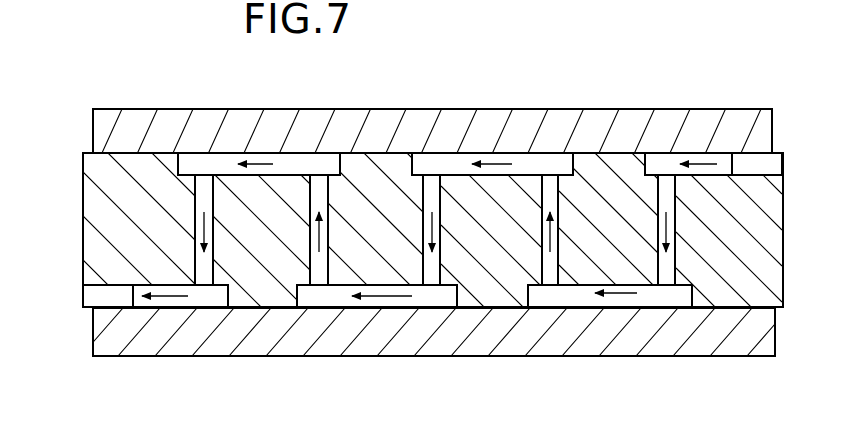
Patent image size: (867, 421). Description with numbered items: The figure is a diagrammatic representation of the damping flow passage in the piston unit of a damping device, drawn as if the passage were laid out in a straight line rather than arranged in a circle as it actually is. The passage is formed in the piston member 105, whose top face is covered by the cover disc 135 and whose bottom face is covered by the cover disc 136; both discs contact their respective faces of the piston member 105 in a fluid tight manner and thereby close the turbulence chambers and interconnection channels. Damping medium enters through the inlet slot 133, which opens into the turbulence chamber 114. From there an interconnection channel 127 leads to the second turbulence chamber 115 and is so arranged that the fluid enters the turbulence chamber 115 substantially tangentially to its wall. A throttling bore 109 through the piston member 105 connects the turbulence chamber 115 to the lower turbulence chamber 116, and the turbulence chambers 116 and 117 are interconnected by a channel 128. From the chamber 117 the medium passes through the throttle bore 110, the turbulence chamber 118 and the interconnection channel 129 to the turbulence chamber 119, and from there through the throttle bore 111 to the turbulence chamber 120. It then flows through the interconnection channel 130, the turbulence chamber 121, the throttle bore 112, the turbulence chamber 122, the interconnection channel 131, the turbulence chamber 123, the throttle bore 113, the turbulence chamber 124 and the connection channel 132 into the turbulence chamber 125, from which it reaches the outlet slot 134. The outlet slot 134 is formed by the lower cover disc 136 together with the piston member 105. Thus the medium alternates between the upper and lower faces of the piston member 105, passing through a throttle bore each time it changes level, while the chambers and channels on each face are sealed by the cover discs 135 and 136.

The piston member 105 is at (752, 288).
The throttling bore 109 is at (659, 230).
The throttle bore 110 is at (543, 230).
The throttle bore 111 is at (424, 230).
The throttle bore 112 is at (311, 231).
The throttle bore 113 is at (196, 210).
The turbulence chamber 114 is at (743, 160).
The turbulence chamber 115 is at (648, 158).
The turbulence chamber 116 is at (685, 292).
The turbulence chamber 117 is at (530, 298).
The turbulence chamber 118 is at (560, 160).
The turbulence chamber 119 is at (417, 160).
The turbulence chamber 120 is at (448, 298).
The turbulence chamber 121 is at (297, 298).
The turbulence chamber 122 is at (327, 165).
The turbulence chamber 123 is at (187, 160).
The turbulence chamber 124 is at (228, 298).
The turbulence chamber 125 is at (117, 298).
The interconnection channel 127 is at (703, 158).
The channel 128 is at (610, 298).
The interconnection channel 129 is at (492, 155).
The interconnection channel 130 is at (388, 298).
The interconnection channel 131 is at (260, 157).
The connection channel 132 is at (173, 297).
The inlet slot 133 is at (788, 152).
The outlet slot 134 is at (83, 308).
The cover disc 135 is at (598, 109).
The cover disc 136 is at (636, 330).